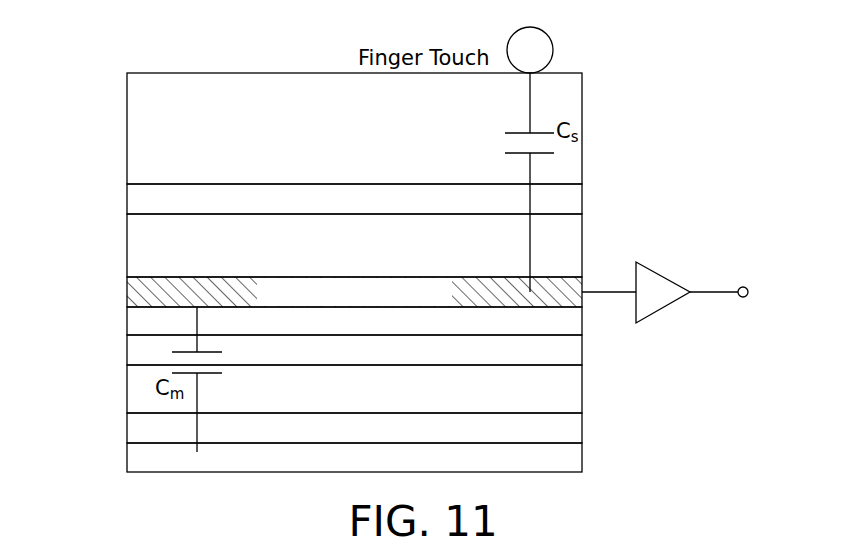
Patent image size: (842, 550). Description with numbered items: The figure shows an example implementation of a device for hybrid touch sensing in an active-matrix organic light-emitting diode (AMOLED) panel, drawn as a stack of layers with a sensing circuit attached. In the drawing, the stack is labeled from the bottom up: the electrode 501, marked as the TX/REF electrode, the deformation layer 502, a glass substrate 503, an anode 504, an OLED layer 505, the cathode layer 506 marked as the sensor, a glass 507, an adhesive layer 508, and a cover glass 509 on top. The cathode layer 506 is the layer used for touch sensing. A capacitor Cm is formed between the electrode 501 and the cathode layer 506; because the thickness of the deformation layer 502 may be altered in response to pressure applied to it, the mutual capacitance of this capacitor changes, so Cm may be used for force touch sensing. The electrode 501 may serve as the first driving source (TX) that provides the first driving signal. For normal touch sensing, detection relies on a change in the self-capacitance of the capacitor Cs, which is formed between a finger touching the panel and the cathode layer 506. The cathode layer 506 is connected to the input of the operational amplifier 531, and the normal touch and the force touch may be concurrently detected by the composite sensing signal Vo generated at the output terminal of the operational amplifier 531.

The electrode 501 is at (127, 458).
The deformation layer 502 is at (127, 424).
The glass substrate 503 is at (127, 386).
The anode 504 is at (127, 349).
The OLED 505 is at (127, 316).
The cathode layer 506 is at (127, 289).
The glass 507 is at (127, 243).
The adhesive layer 508 is at (127, 199).
The cover glass 509 is at (127, 129).
The operational amplifier 531 is at (664, 306).